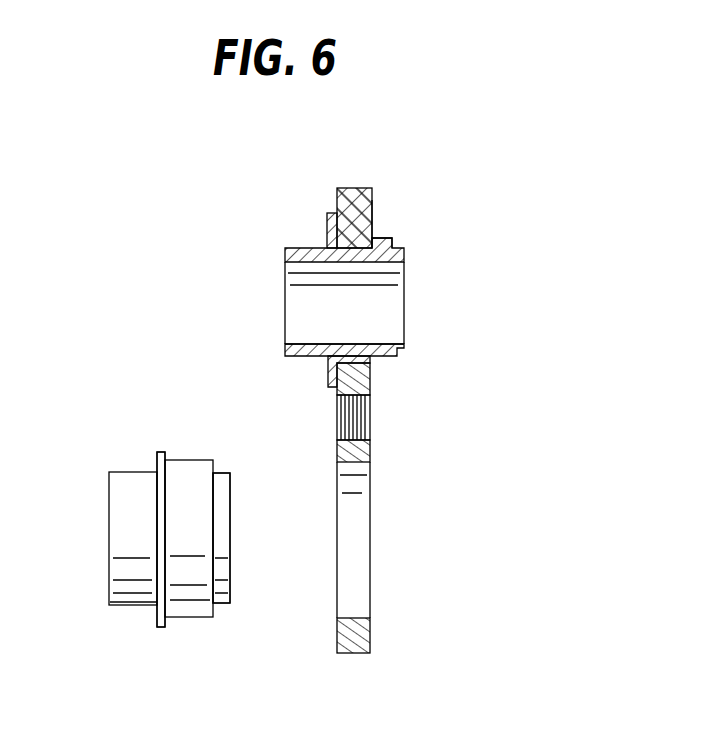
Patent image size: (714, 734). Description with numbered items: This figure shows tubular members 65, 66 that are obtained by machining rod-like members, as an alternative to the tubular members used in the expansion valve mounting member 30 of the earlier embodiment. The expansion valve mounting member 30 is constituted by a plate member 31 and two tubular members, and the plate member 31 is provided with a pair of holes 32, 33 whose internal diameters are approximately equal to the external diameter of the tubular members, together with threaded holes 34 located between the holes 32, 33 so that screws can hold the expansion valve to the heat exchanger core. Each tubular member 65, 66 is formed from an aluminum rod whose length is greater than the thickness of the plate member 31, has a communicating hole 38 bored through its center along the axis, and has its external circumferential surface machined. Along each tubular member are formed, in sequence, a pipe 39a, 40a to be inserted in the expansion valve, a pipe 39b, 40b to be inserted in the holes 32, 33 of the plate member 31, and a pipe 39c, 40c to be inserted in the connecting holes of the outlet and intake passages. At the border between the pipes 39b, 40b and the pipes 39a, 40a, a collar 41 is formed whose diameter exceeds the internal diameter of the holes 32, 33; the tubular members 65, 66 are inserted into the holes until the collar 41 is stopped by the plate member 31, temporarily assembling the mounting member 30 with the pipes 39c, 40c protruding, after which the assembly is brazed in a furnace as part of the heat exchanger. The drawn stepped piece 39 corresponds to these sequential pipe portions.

The expansion valve mounting member 30 is at (378, 179).
The plate member 31 is at (370, 640).
The hole 32 is at (363, 542).
The hole 33 is at (390, 240).
The threaded hole 34 is at (370, 422).
The communicating hole 38 is at (395, 303).
The plate 39 is at (158, 452).
The pipe 39a is at (133, 472).
The pipe 39b is at (192, 460).
The pipe 39c is at (222, 473).
The pipe 40a is at (298, 357).
The pipe 40b is at (370, 212).
The pipe 40c is at (398, 356).
The collar 41 is at (327, 213).
The tubular member 65 is at (127, 604).
The tubular member 66 is at (302, 247).